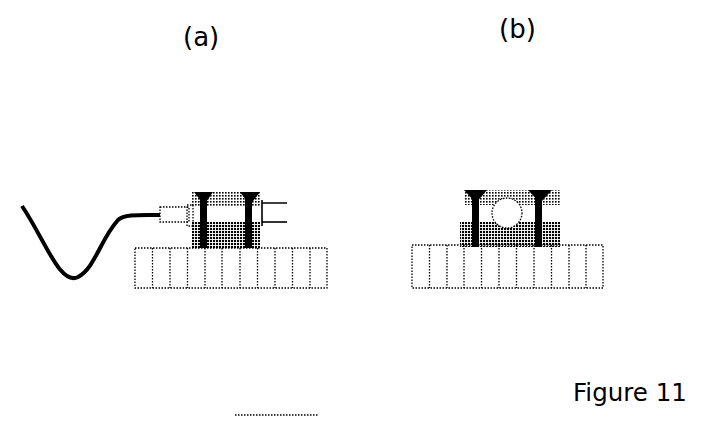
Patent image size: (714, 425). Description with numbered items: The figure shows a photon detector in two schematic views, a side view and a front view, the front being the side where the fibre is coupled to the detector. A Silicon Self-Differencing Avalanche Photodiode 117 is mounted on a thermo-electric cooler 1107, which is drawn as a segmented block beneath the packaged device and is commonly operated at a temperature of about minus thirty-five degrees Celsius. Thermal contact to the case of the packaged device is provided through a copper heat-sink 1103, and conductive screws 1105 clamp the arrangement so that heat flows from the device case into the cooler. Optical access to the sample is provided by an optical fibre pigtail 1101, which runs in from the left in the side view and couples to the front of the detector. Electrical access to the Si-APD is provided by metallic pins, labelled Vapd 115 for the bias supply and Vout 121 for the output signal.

The optical fibre pigtail 1101 is at (102, 200).
The Silicon Self-Differencing Avalanche Photodiode 117 is at (191, 204).
The copper heat-sink 1103 is at (227, 222).
The conductive screws 1105 is at (541, 192).
The thermo-electric cooler 1107 is at (430, 288).
The Vapd 115 is at (317, 197).
The Vout 121 is at (324, 227).